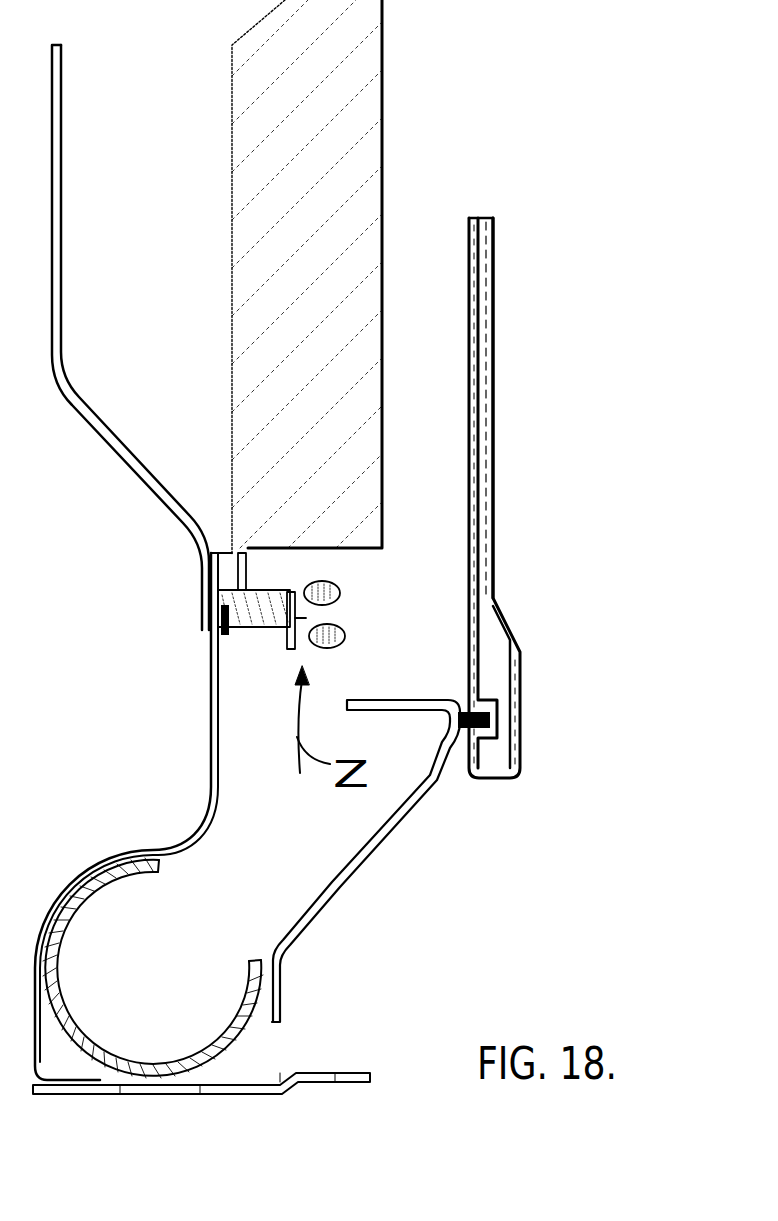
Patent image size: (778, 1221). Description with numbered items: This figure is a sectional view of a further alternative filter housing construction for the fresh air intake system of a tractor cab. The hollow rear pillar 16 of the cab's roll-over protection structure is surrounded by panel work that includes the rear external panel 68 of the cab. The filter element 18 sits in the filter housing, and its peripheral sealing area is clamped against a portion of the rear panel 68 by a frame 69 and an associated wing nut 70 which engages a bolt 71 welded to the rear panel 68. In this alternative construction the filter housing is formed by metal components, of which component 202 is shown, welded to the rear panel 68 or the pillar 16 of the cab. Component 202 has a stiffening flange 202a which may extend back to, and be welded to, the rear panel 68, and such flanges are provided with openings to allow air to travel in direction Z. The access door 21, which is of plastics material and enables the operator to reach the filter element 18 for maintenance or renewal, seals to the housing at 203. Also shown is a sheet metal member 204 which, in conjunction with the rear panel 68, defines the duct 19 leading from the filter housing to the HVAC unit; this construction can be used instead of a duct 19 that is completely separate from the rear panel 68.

The hollow rear pillar 16 is at (77, 897).
The filter element 18 is at (333, 124).
The duct 19 is at (130, 337).
The access door 21 is at (527, 537).
The rear external panel 68 is at (213, 717).
The frame 69 is at (273, 556).
The wing nut 70 is at (345, 597).
The bolt 71 is at (244, 617).
The metal component 202 is at (367, 821).
The stiffening flange 202a is at (387, 700).
The door seal location 203 is at (466, 740).
The sheet metal member 204 is at (55, 225).